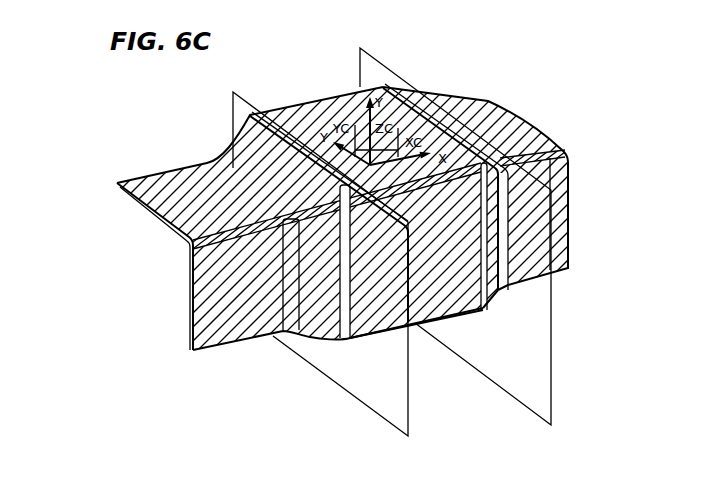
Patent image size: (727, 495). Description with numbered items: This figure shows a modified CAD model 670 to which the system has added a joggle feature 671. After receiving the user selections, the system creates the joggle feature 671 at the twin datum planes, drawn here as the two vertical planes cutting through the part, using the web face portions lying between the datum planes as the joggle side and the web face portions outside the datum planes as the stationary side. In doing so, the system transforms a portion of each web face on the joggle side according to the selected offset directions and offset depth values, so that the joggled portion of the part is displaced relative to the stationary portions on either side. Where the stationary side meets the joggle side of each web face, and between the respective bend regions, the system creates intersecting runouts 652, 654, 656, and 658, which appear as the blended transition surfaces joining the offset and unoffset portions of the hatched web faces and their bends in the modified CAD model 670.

The modified CAD model 670 is at (163, 143).
The intersecting runout 652 is at (228, 150).
The intersecting runout 654 is at (318, 325).
The intersecting runout 656 is at (450, 120).
The intersecting runout 658 is at (548, 280).
The joggle feature 671 is at (449, 311).